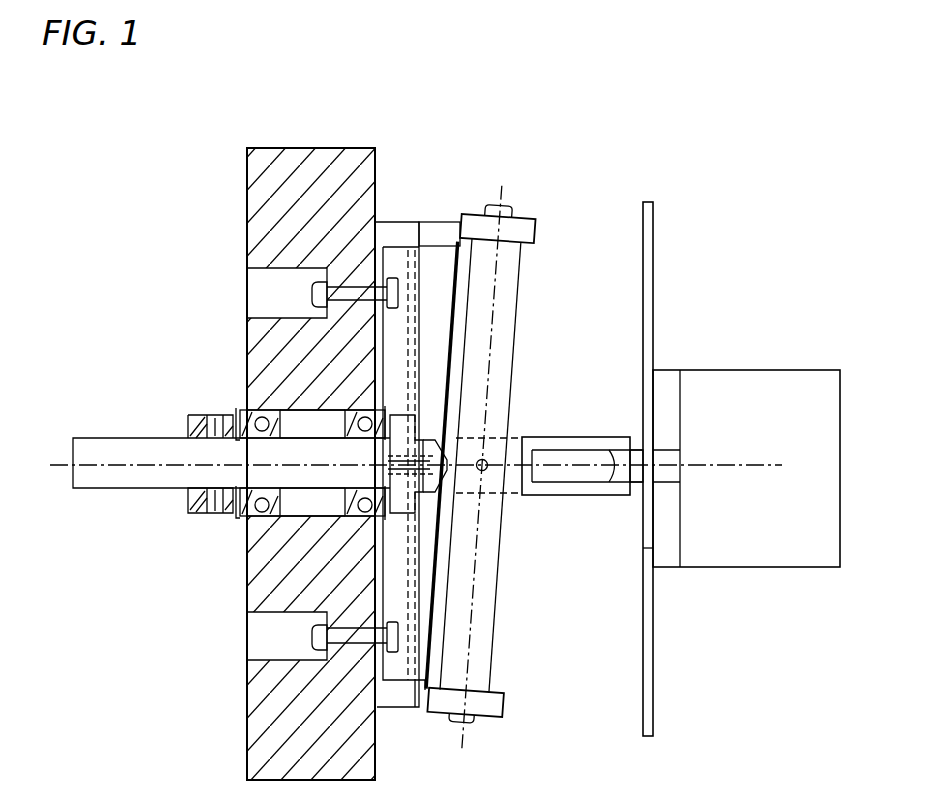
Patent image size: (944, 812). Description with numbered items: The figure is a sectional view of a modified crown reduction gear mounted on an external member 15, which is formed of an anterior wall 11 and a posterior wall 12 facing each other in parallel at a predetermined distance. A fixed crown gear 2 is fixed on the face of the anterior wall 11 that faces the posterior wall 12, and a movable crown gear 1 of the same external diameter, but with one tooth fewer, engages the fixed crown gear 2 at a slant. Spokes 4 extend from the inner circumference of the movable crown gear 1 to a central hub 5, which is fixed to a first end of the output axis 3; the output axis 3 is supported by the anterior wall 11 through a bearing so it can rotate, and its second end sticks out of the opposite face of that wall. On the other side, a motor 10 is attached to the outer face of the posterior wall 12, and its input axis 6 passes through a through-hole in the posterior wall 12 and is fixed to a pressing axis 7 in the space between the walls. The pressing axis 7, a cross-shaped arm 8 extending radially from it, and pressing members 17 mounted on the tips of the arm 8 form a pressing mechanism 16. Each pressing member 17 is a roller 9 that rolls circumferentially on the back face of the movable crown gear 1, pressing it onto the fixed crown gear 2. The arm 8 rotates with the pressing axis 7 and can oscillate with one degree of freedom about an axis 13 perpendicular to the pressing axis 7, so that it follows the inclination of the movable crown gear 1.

The movable crown gear 1 is at (437, 234).
The fixed crown gear 2 is at (387, 240).
The output axis 3 is at (118, 452).
The spokes 4 is at (442, 465).
The hub 5 is at (435, 442).
The input axis 6 is at (638, 488).
The pressing axis 7 is at (593, 442).
The arm 8 is at (482, 464).
The roller 9 is at (498, 223).
The motor 10 is at (802, 392).
The anterior wall 11 is at (270, 205).
The posterior wall 12 is at (648, 357).
The axis 13 is at (482, 465).
The external member 15 is at (450, 464).
The pressing mechanism 16 is at (507, 462).
The pressing members 17 is at (498, 223).